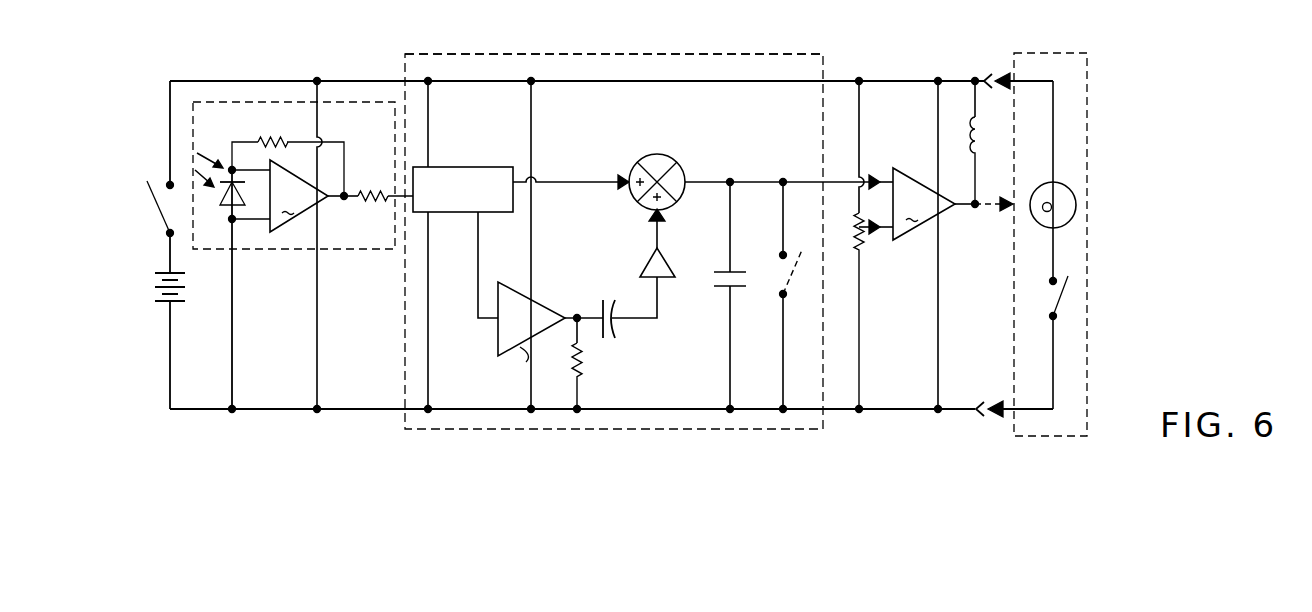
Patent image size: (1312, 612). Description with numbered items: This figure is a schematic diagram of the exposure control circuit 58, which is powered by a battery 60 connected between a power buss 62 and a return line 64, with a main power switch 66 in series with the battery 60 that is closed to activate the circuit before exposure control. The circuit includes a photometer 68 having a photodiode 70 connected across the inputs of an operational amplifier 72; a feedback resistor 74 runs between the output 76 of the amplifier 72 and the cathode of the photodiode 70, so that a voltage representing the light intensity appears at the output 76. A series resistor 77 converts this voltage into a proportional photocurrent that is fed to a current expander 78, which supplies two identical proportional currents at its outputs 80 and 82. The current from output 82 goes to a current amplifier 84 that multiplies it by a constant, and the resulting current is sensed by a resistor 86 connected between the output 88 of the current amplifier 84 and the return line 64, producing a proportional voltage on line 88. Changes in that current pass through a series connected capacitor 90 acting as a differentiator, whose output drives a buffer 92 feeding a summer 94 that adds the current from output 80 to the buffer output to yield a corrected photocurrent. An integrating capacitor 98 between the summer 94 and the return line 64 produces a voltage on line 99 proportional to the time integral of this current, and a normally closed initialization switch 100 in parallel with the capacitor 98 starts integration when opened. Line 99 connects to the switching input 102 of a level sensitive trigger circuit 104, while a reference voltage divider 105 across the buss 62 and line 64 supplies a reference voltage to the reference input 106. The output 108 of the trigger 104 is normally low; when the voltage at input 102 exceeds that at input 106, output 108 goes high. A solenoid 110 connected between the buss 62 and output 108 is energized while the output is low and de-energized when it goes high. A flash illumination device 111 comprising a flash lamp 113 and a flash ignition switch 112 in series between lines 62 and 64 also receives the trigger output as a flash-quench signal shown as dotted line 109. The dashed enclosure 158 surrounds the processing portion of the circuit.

The exposure control circuit 58 is at (751, 46).
The battery 60 is at (157, 288).
The power buss 62 is at (210, 80).
The return line 64 is at (232, 411).
The main power switch 66 is at (155, 216).
The photometer 68 is at (292, 97).
The photodiode 70 is at (228, 206).
The operational amplifier 72 is at (280, 245).
The feedback resistor 74 is at (273, 137).
The output of the operational amplifier 76 is at (342, 250).
The series resistor 77 is at (381, 191).
The current expander 78 is at (497, 167).
The current expander output 80 is at (541, 181).
The current expander output 82 is at (478, 239).
The current amplifier 84 is at (561, 308).
The resistor 86 is at (583, 373).
The output of the current amplifier 88 is at (577, 327).
The capacitor 90 is at (615, 326).
The buffer 92 is at (688, 243).
The summer 94 is at (679, 163).
The integrating capacitor 98 is at (760, 247).
The line 99 is at (735, 182).
The initialization switch 100 is at (780, 283).
The switching input 102 is at (868, 176).
The level sensitive trigger circuit 104 is at (908, 245).
The reference voltage divider 105 is at (860, 246).
The reference input 106 is at (884, 230).
The output of the trigger circuit 108 is at (960, 206).
The flash-quench signal 109 is at (992, 201).
The solenoid 110 is at (971, 125).
The flash illumination device 111 is at (1090, 66).
The flash ignition switch 112 is at (1067, 292).
The flash lamp 113 is at (1077, 206).
The circuit enclosure 158 is at (600, 53).